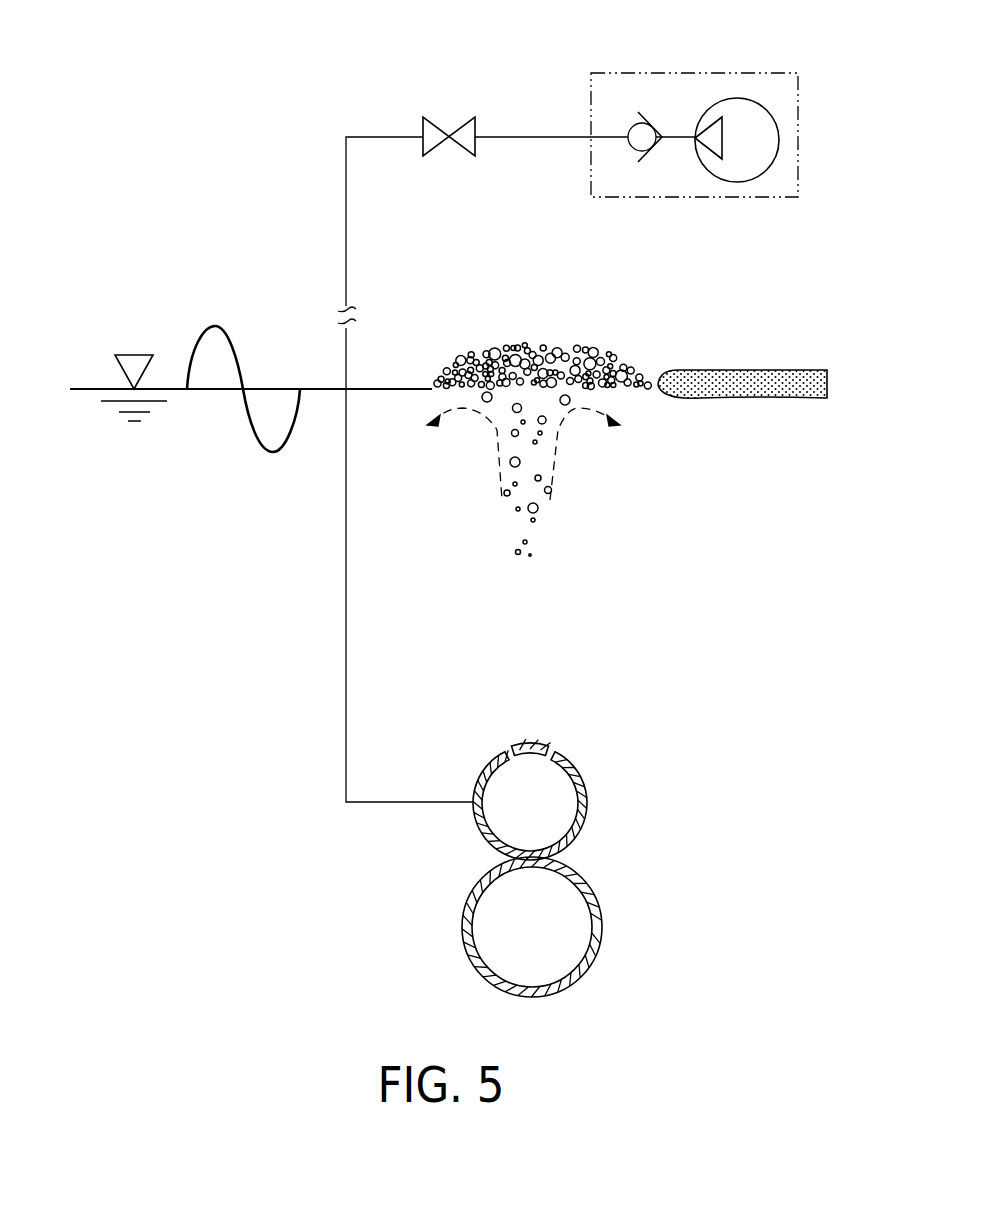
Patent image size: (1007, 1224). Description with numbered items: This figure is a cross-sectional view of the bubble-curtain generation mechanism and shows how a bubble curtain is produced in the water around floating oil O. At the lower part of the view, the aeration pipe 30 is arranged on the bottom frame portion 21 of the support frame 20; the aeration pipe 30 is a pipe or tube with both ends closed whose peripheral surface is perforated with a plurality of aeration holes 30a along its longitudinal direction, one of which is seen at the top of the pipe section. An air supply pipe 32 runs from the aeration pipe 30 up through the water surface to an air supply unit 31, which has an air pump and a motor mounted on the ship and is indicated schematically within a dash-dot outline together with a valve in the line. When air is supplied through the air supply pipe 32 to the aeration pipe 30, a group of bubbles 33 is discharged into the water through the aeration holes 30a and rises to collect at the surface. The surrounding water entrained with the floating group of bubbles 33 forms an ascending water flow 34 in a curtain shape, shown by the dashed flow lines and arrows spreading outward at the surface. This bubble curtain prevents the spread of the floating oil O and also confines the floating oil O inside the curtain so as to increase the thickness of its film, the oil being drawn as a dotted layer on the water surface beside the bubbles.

The air supply unit 31 is at (715, 73).
The air supply pipe 32 is at (346, 200).
The group of bubbles 33 is at (540, 338).
The ascending water flow 34 is at (588, 409).
The floating oil O is at (723, 372).
The aeration pipe 30 is at (587, 792).
The aeration holes 30a is at (507, 745).
The bottom frame portion 21 is at (602, 927).
The support frame 20 is at (598, 908).